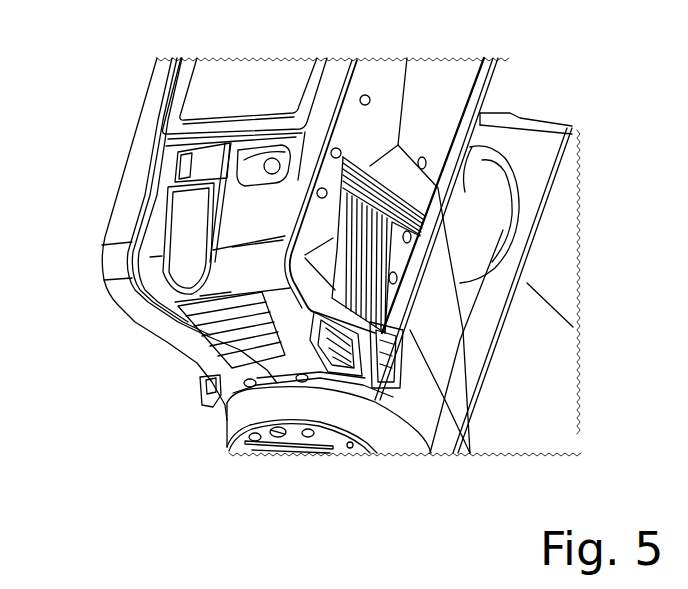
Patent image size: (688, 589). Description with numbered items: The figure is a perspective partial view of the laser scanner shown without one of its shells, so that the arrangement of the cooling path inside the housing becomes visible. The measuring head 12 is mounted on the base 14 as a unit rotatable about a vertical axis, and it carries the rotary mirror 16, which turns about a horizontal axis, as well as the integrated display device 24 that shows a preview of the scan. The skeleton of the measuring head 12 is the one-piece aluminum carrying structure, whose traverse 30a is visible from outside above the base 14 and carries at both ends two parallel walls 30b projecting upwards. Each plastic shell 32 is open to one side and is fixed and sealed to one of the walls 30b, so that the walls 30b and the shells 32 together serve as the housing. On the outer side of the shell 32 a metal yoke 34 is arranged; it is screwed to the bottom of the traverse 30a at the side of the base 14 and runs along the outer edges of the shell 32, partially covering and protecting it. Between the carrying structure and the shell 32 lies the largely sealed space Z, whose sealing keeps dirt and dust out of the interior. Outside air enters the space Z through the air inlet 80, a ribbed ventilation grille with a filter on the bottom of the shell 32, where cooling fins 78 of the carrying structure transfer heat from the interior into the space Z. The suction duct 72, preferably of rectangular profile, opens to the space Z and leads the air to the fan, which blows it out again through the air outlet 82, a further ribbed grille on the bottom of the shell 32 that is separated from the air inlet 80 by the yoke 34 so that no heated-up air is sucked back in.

The measuring head 12 is at (572, 128).
The base 14 is at (355, 423).
The rotary mirror 16 is at (477, 167).
The display device 24 is at (222, 90).
The traverse 30a is at (445, 335).
The walls 30b is at (533, 143).
The shell 32 is at (567, 190).
The yoke 34 is at (107, 278).
The suction duct 72 is at (392, 222).
The cooling fins 78 is at (385, 332).
The air inlet 80 is at (345, 365).
The air outlet 82 is at (237, 323).
The space Z is at (400, 258).